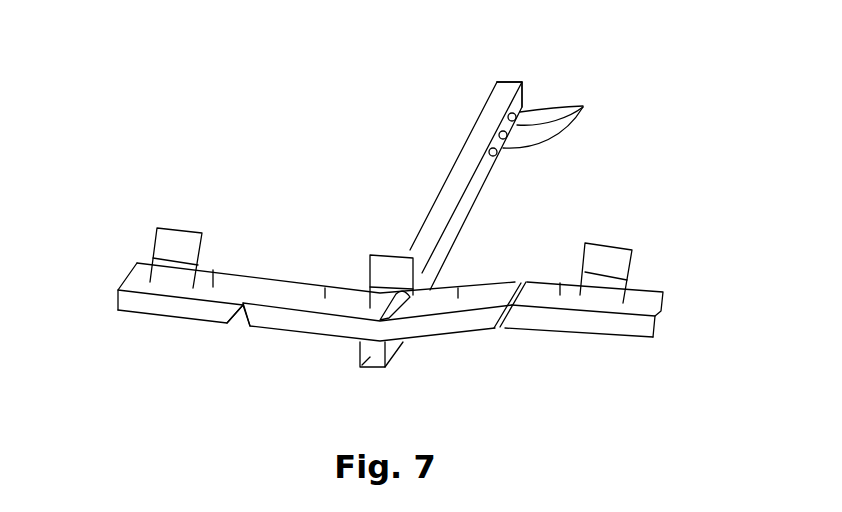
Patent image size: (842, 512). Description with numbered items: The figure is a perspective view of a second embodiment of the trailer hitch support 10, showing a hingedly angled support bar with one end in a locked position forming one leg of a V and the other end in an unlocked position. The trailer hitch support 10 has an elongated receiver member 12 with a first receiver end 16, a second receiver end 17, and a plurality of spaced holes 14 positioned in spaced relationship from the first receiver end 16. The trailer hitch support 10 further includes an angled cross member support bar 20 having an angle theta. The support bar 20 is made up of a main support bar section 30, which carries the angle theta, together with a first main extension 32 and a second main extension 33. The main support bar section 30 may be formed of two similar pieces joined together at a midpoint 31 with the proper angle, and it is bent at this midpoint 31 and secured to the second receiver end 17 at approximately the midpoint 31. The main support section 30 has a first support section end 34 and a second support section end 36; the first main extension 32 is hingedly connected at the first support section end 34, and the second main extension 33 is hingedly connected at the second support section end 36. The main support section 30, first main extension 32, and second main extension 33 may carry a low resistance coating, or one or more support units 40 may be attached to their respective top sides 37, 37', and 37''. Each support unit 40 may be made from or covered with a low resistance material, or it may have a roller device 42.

The trailer hitch support 10 is at (276, 56).
The elongated receiver member 12 is at (470, 158).
The plurality of spaced holes 14 is at (555, 110).
The first receiver end 16 is at (513, 78).
The second receiver end 17 is at (357, 369).
The angled cross member support bar 20 is at (225, 348).
The main support bar section 30 is at (327, 327).
The midpoint 31 is at (410, 297).
The first main extension 32 is at (160, 303).
The second main extension 33 is at (587, 320).
The first support section end 34 is at (243, 306).
The second support section end 36 is at (518, 286).
The top side 37 is at (392, 259).
The top side 37' is at (254, 240).
The top side 37'' is at (530, 251).
The support unit 40 is at (137, 243).
The roller device 42 is at (603, 243).